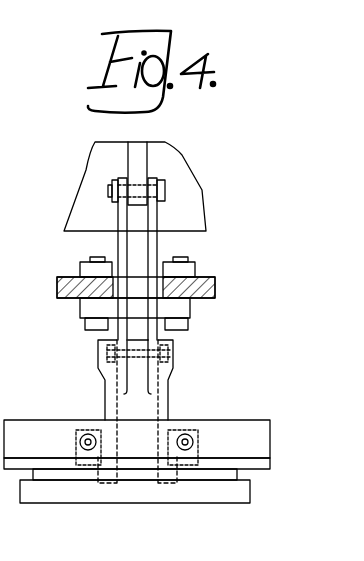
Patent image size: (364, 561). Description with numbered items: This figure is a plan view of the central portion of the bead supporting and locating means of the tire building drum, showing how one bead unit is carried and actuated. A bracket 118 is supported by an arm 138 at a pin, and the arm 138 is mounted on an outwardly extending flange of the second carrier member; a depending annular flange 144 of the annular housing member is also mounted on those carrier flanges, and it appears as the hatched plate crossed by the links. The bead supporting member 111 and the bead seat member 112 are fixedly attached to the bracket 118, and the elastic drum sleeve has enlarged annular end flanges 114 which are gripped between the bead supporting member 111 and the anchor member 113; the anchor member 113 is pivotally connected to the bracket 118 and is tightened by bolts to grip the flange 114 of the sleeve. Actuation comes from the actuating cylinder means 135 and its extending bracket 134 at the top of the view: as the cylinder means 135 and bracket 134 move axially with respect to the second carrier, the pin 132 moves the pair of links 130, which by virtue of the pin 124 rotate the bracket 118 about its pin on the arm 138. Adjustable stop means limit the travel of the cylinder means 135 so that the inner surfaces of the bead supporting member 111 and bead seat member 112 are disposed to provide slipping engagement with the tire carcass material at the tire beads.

The bead supporting member 111 is at (260, 463).
The bead seat member 112 is at (258, 431).
The anchor member 113 is at (236, 493).
The annular end flange 114 is at (86, 436).
The bracket 118 is at (107, 388).
The pin 124 is at (170, 354).
The link 130 is at (152, 252).
The pin 132 is at (167, 190).
The extending bracket 134 is at (133, 160).
The actuating cylinder means 135 is at (183, 203).
The arm 138 is at (166, 338).
The depending annular flange 144 is at (215, 290).